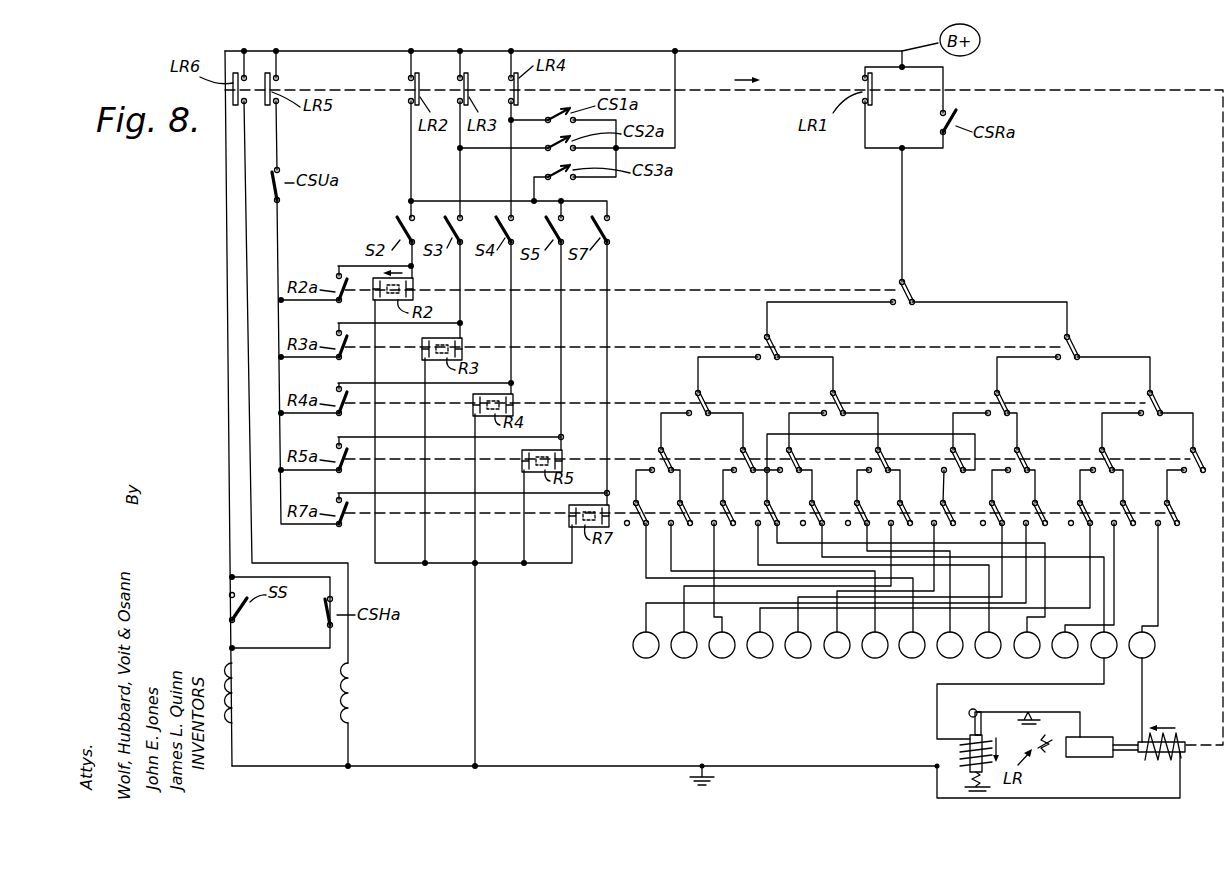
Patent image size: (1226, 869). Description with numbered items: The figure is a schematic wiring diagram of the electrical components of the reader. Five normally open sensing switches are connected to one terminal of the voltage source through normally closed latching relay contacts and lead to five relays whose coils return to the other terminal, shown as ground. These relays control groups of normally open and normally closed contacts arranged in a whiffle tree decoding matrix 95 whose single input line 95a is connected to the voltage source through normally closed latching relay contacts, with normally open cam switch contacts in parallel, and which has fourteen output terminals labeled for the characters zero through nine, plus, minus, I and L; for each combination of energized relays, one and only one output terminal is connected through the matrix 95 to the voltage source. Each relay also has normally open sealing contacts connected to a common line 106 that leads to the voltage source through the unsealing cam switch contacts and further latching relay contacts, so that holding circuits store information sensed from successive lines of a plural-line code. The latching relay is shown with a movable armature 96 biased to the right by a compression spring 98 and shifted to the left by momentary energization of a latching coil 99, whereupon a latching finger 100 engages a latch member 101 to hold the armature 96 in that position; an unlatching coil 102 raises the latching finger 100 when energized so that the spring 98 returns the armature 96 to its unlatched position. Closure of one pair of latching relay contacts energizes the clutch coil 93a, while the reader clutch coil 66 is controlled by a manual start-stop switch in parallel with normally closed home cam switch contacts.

The common line 106 is at (226, 218).
The input line 95a is at (903, 198).
The decoding matrix 95 is at (968, 283).
The clutch coil 66 is at (240, 707).
The clutch coil 93a is at (356, 706).
The movable armature 96 is at (1185, 752).
The compression spring 98 is at (1050, 752).
The latching coil 99 is at (1180, 735).
The latching finger 100 is at (1053, 713).
The latch member 101 is at (1098, 758).
The unlatching coil 102 is at (967, 748).